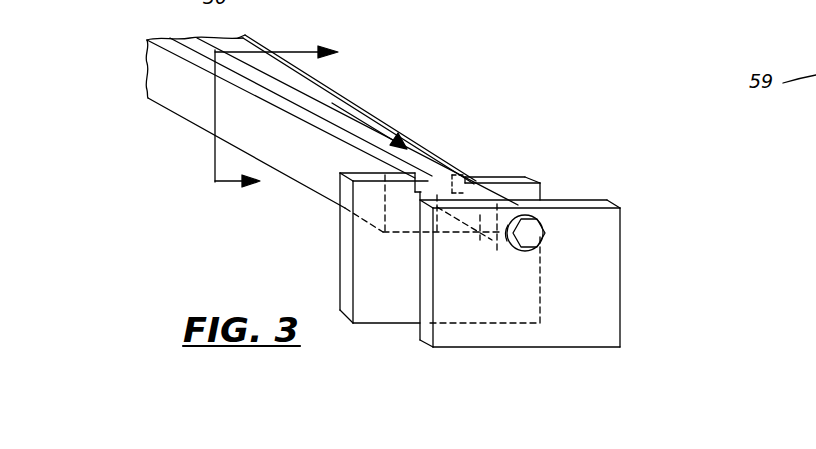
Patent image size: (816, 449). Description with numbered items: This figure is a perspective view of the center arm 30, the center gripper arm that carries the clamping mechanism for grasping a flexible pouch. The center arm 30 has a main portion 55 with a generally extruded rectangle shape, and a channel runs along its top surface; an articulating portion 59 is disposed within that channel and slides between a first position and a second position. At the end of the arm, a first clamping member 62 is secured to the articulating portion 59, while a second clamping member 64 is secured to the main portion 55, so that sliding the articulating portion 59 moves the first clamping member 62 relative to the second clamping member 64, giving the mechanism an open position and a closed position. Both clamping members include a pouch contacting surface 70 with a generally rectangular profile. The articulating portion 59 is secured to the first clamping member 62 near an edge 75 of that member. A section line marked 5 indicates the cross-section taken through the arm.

The section line 5- 5 is at (276, 117).
The center arm 30 is at (391, 100).
The main portion 55 is at (188, 105).
The articulating portion 59 is at (293, 88).
The first clamping member 62 is at (607, 247).
The second clamping member 64 is at (518, 192).
The pouch contacting surface 70 is at (367, 302).
The edge 75 is at (545, 231).